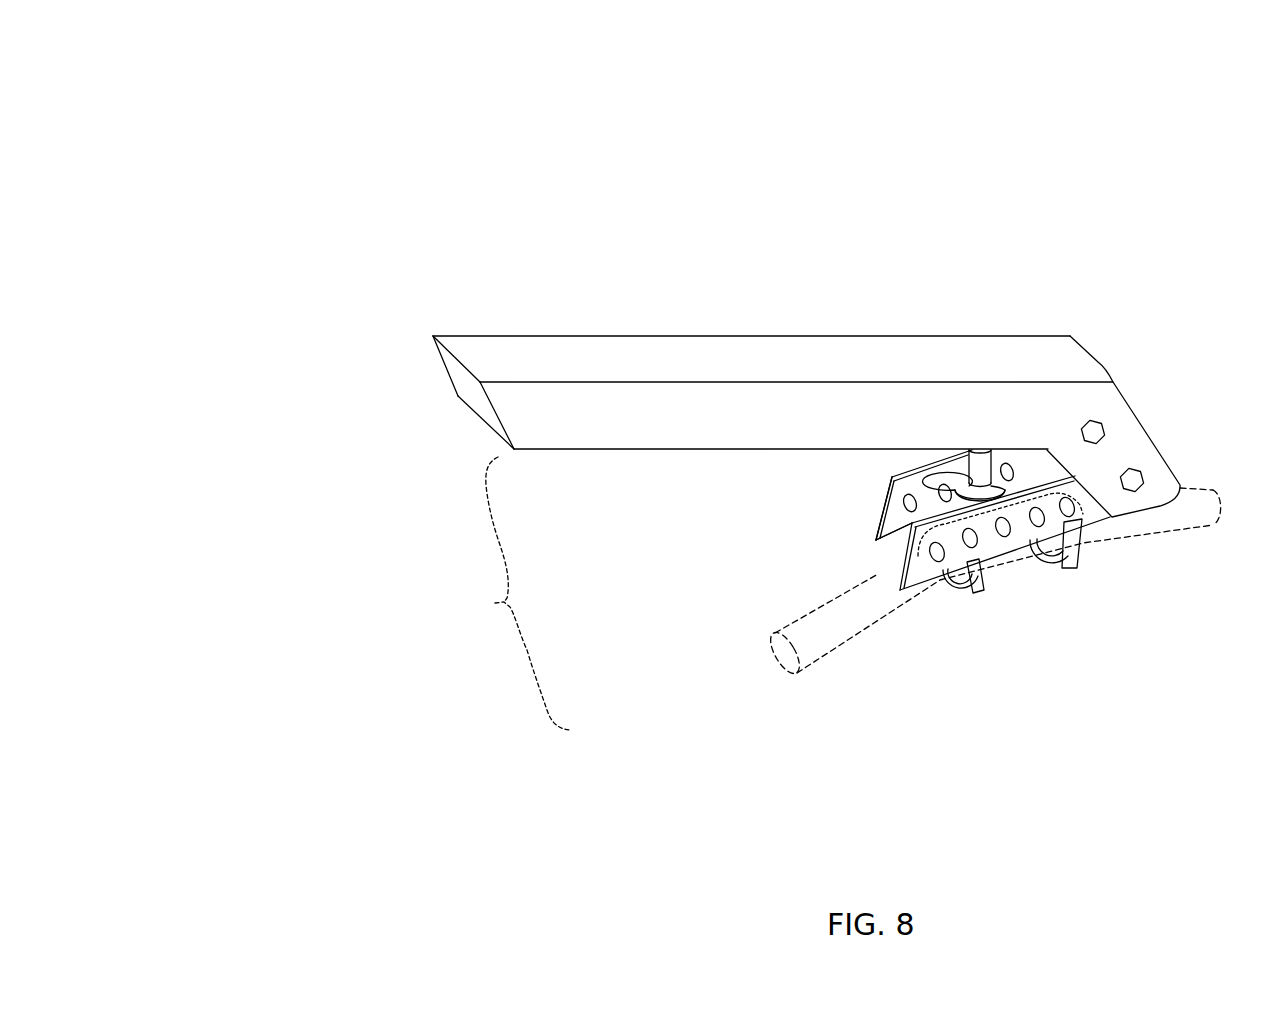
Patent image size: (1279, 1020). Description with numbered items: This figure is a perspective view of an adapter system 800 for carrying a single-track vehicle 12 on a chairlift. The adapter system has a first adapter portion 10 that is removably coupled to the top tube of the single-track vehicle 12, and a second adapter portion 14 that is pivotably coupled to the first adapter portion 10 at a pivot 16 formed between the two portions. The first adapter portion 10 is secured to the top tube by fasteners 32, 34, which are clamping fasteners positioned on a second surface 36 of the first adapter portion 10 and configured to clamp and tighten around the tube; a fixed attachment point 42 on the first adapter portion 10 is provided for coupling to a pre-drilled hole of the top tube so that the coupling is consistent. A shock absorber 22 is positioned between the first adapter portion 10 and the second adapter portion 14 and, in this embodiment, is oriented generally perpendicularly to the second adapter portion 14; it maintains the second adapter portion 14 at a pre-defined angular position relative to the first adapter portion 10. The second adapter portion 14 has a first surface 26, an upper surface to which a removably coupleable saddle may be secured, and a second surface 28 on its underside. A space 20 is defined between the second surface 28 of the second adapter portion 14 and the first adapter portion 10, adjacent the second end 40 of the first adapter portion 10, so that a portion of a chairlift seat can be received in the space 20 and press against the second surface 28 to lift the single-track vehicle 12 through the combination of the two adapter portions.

The adapter system 800 is at (316, 34).
The first adapter portion 10 is at (873, 558).
The single-track vehicle 12 is at (780, 603).
The second adapter portion 14 is at (1098, 362).
The pivot 16 is at (1178, 434).
The space 20 is at (507, 593).
The shock absorber 22 is at (982, 450).
The first surface 26 is at (752, 292).
The second surface 28 is at (740, 481).
The fastener 32 is at (968, 596).
The fastener 34 is at (1063, 568).
The second surface 36 is at (877, 603).
The second end 40 is at (857, 521).
The fixed attachment point 42 is at (1044, 490).